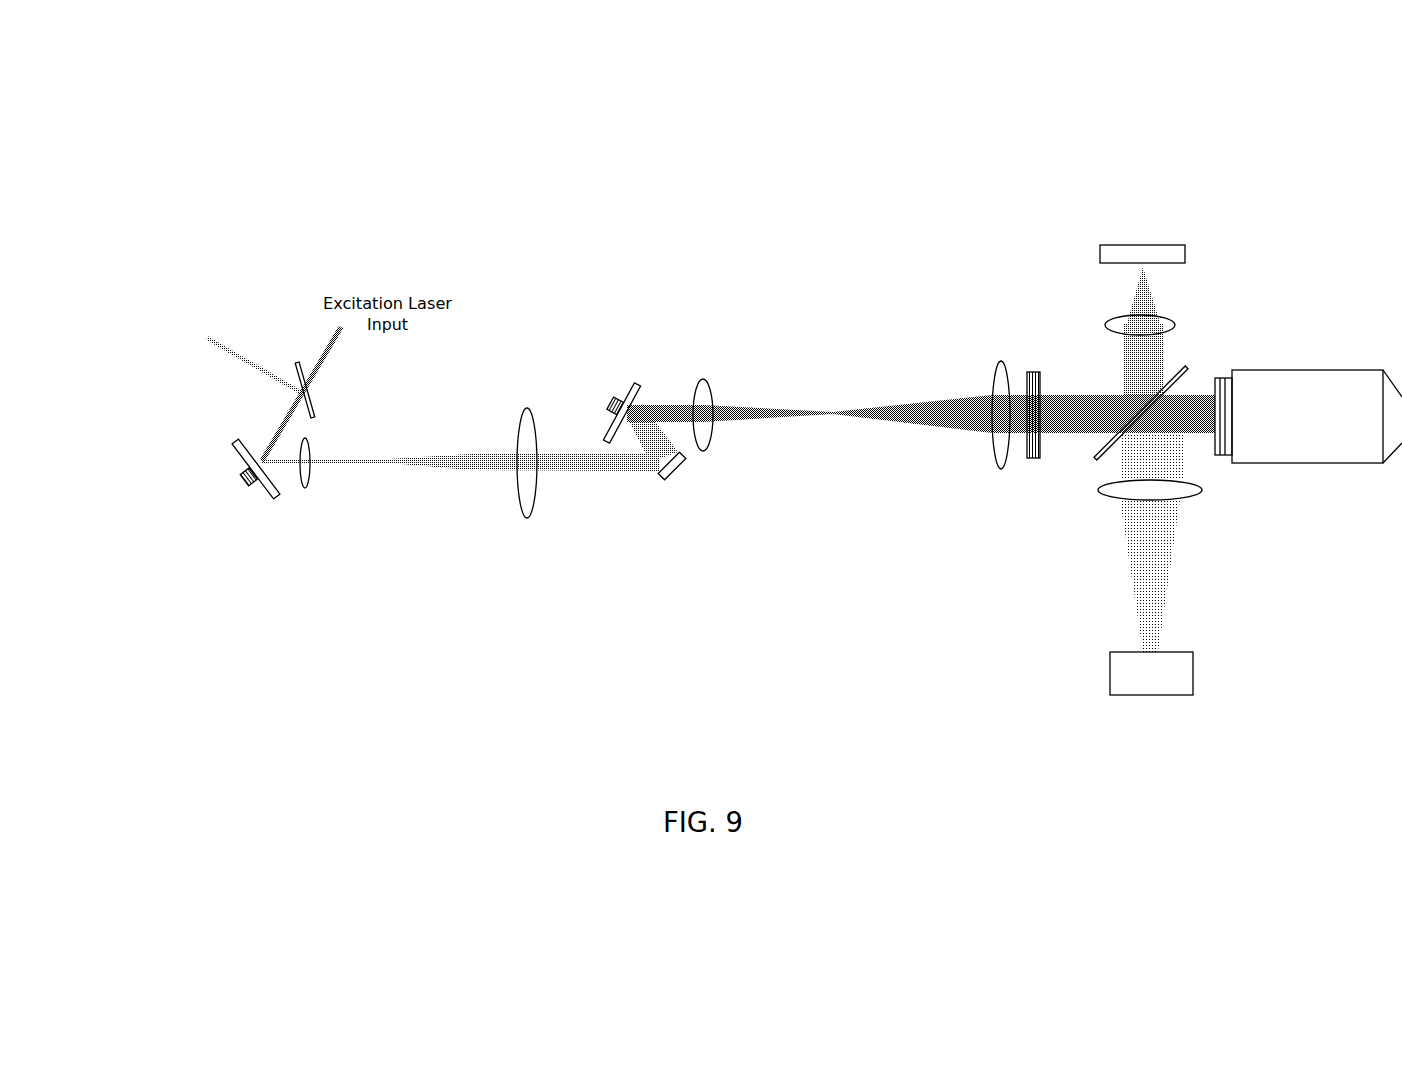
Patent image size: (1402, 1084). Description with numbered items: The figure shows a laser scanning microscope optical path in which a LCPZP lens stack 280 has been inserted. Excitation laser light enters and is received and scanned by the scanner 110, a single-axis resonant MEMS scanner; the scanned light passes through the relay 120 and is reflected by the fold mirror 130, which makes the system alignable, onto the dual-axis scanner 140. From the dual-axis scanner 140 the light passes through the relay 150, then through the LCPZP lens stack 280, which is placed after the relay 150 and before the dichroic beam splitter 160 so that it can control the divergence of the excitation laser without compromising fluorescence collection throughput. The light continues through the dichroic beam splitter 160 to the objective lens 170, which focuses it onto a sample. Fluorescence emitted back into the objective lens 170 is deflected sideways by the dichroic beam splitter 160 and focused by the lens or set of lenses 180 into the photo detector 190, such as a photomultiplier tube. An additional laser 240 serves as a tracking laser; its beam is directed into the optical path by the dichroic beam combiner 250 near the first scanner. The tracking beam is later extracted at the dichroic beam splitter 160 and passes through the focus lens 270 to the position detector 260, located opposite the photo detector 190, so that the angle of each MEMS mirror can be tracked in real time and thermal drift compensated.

The scanner 110 is at (179, 492).
The relay 120 is at (521, 548).
The fold mirror 130 is at (685, 505).
The dual-axis scanner 140 is at (569, 380).
The relay 150 is at (995, 347).
The dichroic beam splitter 160 is at (1101, 424).
The objective lens 170 is at (1308, 389).
The lens or set of lenses 180 is at (1093, 530).
The photo detector 190 is at (1080, 682).
The additional laser 240 is at (173, 333).
The dichroic beam combiner 250 is at (373, 411).
The position detector 260 is at (1143, 218).
The focus lens 270 is at (1161, 316).
The LCPZP lens stack 280 is at (1031, 348).